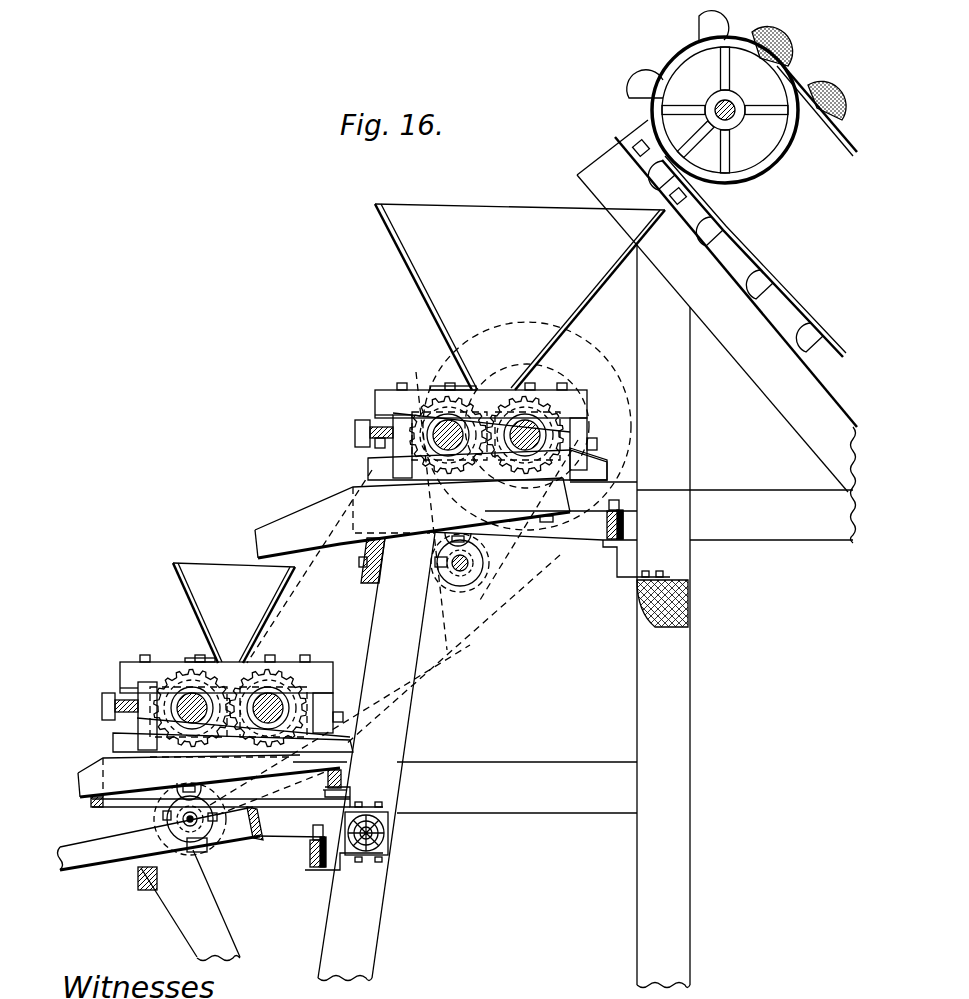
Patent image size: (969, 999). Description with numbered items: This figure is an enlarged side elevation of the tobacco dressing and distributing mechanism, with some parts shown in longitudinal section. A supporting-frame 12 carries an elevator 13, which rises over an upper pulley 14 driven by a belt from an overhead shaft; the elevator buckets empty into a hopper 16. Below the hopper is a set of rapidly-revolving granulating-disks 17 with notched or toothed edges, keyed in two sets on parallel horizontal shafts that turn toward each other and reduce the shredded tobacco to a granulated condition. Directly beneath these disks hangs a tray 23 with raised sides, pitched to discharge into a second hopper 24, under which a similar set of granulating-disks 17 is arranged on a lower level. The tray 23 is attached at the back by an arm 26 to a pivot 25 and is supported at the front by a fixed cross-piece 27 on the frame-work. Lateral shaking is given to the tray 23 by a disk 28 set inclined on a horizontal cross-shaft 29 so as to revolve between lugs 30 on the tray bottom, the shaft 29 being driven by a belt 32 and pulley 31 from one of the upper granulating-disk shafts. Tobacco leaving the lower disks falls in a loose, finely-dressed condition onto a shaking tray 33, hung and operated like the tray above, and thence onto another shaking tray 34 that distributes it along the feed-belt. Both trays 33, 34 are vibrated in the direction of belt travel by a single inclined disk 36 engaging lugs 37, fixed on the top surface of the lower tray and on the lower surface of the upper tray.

The supporting-frame 12 is at (626, 616).
The elevator 13 is at (717, 306).
The pulley 14 is at (742, 101).
The hopper 16 is at (520, 297).
The granulating-disks 17 is at (428, 400).
The tray 23 is at (412, 518).
The second hopper 24 is at (234, 613).
The pivot 25 is at (625, 522).
The arm 26 is at (605, 512).
The fixed cross-piece 27 is at (370, 580).
The disk 28 is at (468, 580).
The horizontal cross-shaft 29 is at (457, 573).
The lugs 30 is at (470, 537).
The pulley 31 is at (440, 590).
The belt 32 is at (505, 577).
The shaking tray 33 is at (209, 776).
The shaking tray 34 is at (161, 838).
The disk 36 is at (200, 805).
The lugs 37 is at (167, 805).